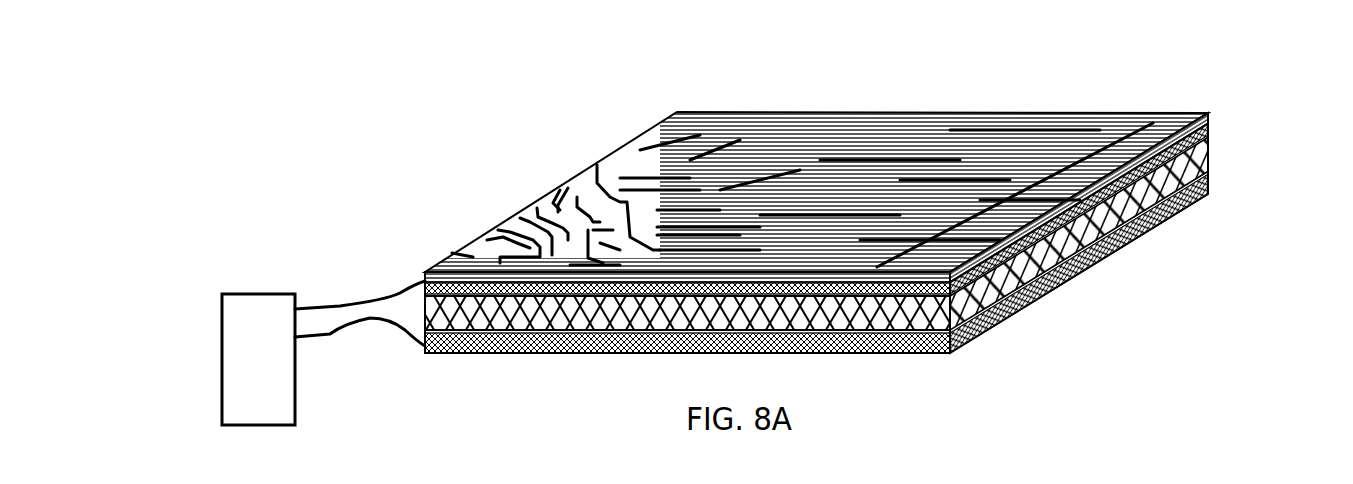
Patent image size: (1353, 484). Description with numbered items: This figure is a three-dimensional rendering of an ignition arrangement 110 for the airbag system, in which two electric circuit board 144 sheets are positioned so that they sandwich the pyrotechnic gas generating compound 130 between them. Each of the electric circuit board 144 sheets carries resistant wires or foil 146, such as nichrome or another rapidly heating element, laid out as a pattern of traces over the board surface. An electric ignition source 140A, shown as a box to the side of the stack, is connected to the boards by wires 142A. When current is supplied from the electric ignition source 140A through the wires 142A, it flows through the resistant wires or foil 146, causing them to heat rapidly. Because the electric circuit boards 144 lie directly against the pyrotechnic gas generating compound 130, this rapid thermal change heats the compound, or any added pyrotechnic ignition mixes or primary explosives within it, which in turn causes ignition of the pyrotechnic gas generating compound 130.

The sensor assembly 110 is at (782, 188).
The resistant wires or foil 146 is at (820, 125).
The electric circuit board 144 is at (1195, 200).
The pyrotechnic gas generating compound 130 is at (1095, 258).
The electric ignition source 140A is at (257, 353).
The wires 142A is at (395, 330).